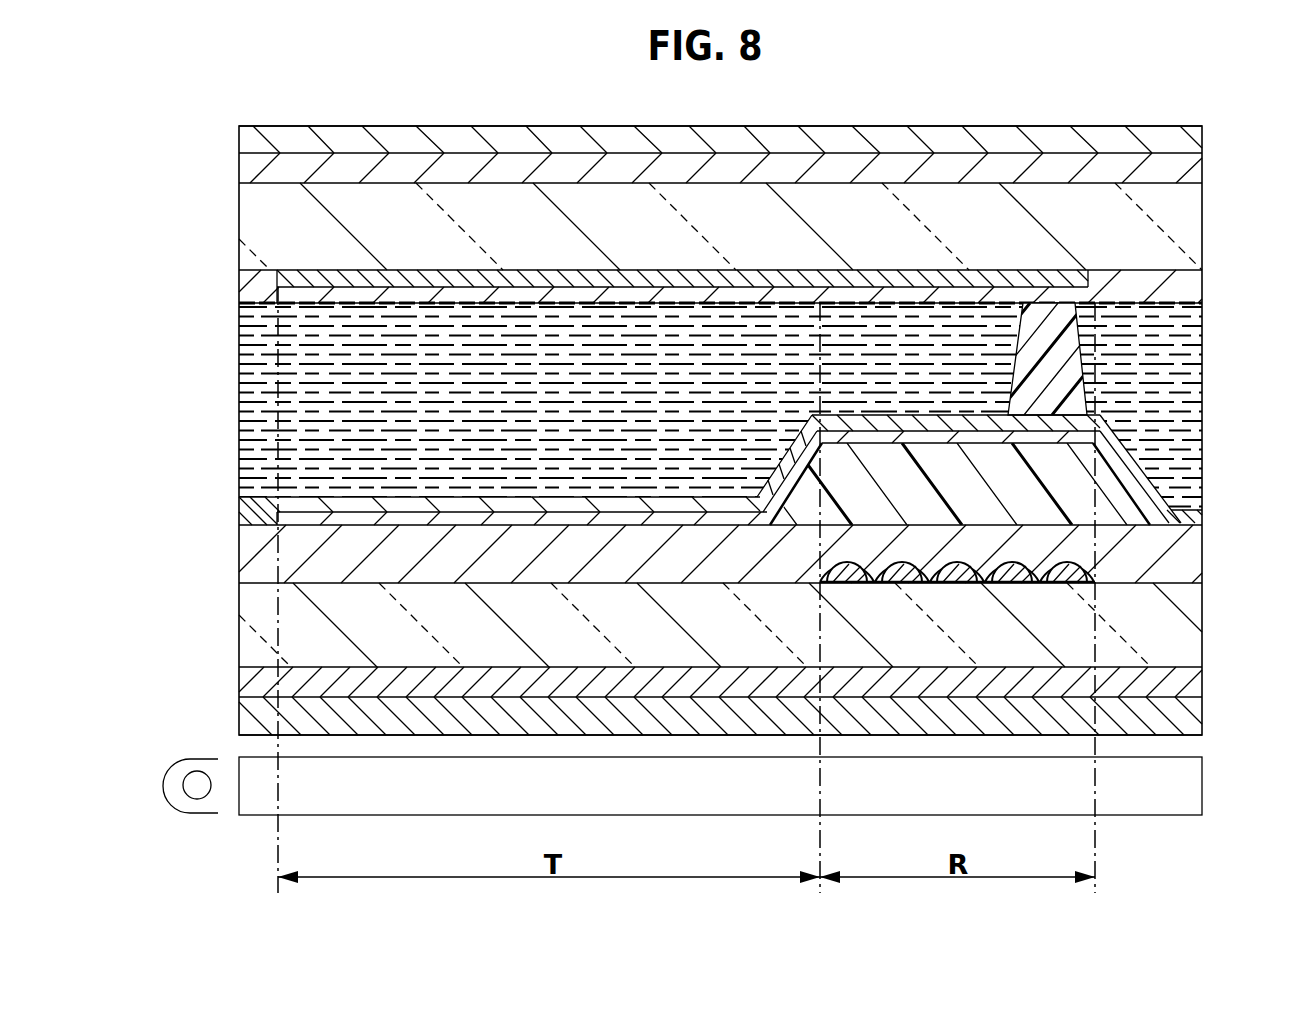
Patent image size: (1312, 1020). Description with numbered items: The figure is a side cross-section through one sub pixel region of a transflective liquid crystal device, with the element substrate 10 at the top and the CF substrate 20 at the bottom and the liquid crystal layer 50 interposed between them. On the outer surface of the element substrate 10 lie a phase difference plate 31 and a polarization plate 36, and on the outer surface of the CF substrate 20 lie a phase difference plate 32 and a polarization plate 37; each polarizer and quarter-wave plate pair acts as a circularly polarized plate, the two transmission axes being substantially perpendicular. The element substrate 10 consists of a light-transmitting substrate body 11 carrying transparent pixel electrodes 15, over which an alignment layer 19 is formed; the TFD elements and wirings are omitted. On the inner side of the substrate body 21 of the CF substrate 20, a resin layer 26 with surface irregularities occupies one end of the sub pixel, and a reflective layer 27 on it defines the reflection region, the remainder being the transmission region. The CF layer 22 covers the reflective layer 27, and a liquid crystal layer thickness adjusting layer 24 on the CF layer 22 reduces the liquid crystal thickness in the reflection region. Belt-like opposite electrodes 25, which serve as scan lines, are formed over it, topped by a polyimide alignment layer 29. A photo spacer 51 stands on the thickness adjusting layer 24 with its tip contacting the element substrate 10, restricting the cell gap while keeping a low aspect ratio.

The element substrate 10 is at (228, 303).
The substrate body 11 is at (1190, 226).
The pixel electrodes 15 is at (420, 288).
The alignment layer 19 is at (1190, 284).
The CF substrate 20 is at (228, 736).
The substrate body 21 is at (1190, 645).
The CF layer 22 is at (1197, 543).
The liquid crystal layer thickness adjusting layer 24 is at (1103, 500).
The opposite electrodes 25 is at (342, 525).
The resin layer 26 is at (1080, 579).
The reflective layer 27 is at (1075, 563).
The alignment layer 29 is at (1195, 515).
The phase difference plate 31 is at (1190, 164).
The phase difference plate 32 is at (1190, 681).
The polarization plate 36 is at (1190, 132).
The polarization plate 37 is at (1190, 715).
The liquid crystal layer 50 is at (723, 406).
The photo spacer 51 is at (1073, 378).